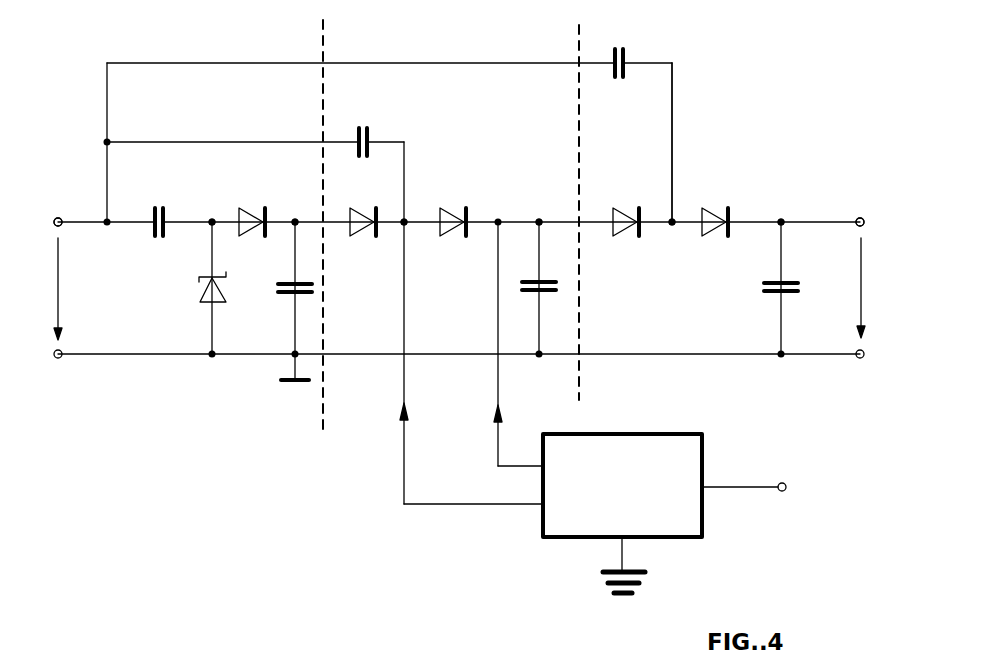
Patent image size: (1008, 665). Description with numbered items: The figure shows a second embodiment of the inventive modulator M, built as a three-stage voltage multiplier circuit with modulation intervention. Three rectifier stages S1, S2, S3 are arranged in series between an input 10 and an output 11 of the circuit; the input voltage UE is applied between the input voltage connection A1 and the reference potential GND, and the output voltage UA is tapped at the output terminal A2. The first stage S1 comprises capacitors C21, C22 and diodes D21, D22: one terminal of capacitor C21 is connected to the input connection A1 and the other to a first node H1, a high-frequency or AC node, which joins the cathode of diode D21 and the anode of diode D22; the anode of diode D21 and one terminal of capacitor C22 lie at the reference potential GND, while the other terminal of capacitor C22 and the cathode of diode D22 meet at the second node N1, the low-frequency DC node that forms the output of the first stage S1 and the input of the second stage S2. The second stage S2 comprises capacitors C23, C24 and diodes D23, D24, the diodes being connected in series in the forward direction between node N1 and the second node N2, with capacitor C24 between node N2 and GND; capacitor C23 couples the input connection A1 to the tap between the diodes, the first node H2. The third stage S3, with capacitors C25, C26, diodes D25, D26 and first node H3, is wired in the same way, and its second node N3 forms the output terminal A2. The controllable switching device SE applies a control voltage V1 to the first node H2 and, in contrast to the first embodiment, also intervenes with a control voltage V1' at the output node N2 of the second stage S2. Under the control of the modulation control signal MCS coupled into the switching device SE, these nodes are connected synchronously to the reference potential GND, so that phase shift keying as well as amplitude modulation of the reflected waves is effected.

The first stage S1 is at (195, 44).
The second stage S2 is at (461, 41).
The third stage S3 is at (718, 42).
The input voltage connection A1 is at (58, 216).
The output terminal A2 is at (860, 214).
The capacitor C21 is at (150, 214).
The capacitor C22 is at (277, 293).
The capacitor C23 is at (373, 129).
The capacitor C24 is at (549, 294).
The capacitor C25 is at (612, 79).
The capacitor C26 is at (766, 300).
The diode D21 is at (198, 291).
The diode D22 is at (251, 209).
The diode D23 is at (361, 237).
The diode D24 is at (452, 208).
The diode D25 is at (611, 210).
The diode D26 is at (701, 238).
The first node H1 is at (206, 215).
The first node H2 is at (401, 218).
The first node H3 is at (676, 216).
The second node N1 is at (291, 230).
The second node N2 is at (538, 215).
The second node N3 is at (782, 215).
The input voltage UE is at (64, 306).
The output voltage UA is at (881, 288).
The input 10 is at (50, 296).
The output 11 is at (877, 296).
The reference potential GND is at (277, 373).
The control voltage V1 is at (471, 363).
The control voltage V1' is at (533, 344).
The controllable switching device SE is at (673, 434).
The modulation control signal MCS is at (787, 496).
The modulator M is at (190, 458).